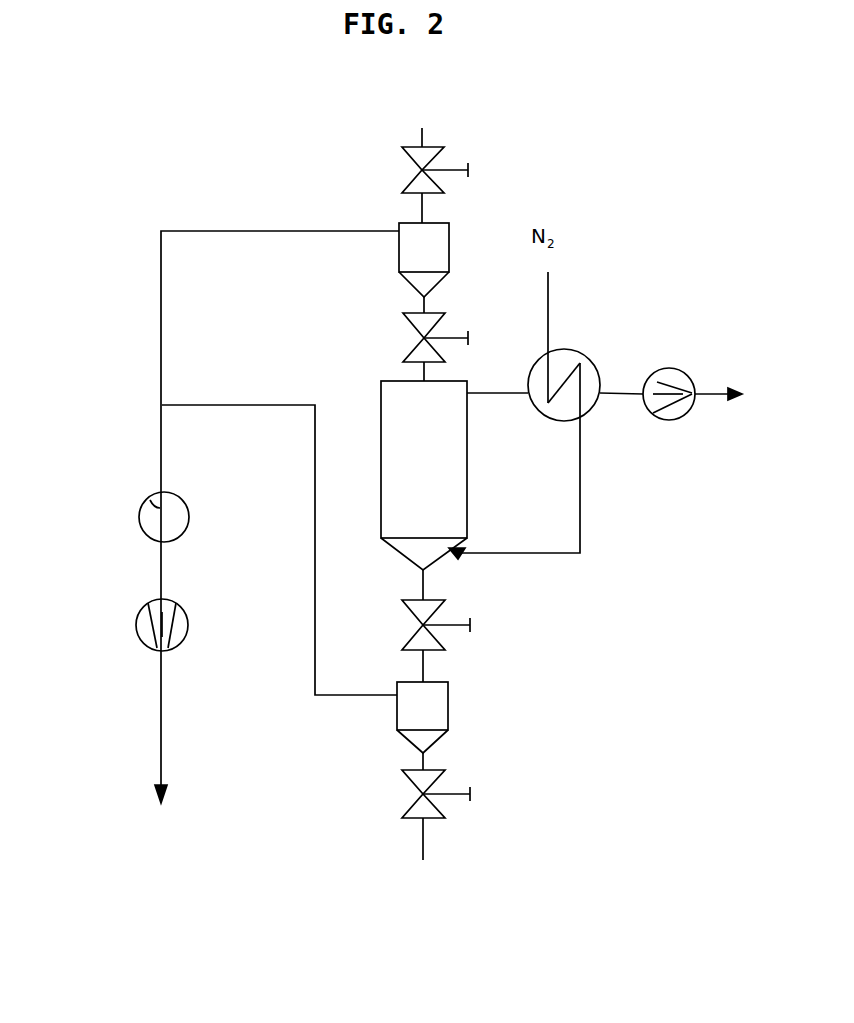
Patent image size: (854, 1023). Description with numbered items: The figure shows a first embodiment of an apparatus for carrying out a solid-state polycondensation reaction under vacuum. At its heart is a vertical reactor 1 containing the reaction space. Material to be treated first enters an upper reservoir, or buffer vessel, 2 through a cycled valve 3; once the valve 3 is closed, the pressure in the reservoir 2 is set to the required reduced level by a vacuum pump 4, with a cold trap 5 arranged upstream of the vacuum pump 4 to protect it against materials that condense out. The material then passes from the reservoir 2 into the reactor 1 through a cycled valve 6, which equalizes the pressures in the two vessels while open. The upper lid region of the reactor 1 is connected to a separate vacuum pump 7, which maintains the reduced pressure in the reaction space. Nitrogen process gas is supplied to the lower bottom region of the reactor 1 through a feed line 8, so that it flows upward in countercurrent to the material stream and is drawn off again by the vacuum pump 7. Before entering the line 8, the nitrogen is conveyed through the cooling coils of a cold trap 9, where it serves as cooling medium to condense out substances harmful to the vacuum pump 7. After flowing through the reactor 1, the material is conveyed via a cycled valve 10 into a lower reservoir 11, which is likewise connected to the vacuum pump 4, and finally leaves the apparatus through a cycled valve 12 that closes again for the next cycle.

The vertical reactor 1 is at (450, 471).
The reservoir (buffer vessel) 2 is at (430, 251).
The cycled valve 3 is at (423, 157).
The vacuum pump 4 is at (152, 629).
The cold trap 5 is at (157, 522).
The cycled valve 6 is at (407, 324).
The vacuum pump 7 is at (658, 383).
The feed line 8 is at (580, 504).
The cold trap 9 is at (565, 367).
The cycled valve 10 is at (432, 613).
The reservoir (buffer vessel) 11 is at (423, 703).
The cycled valve 12 is at (425, 810).